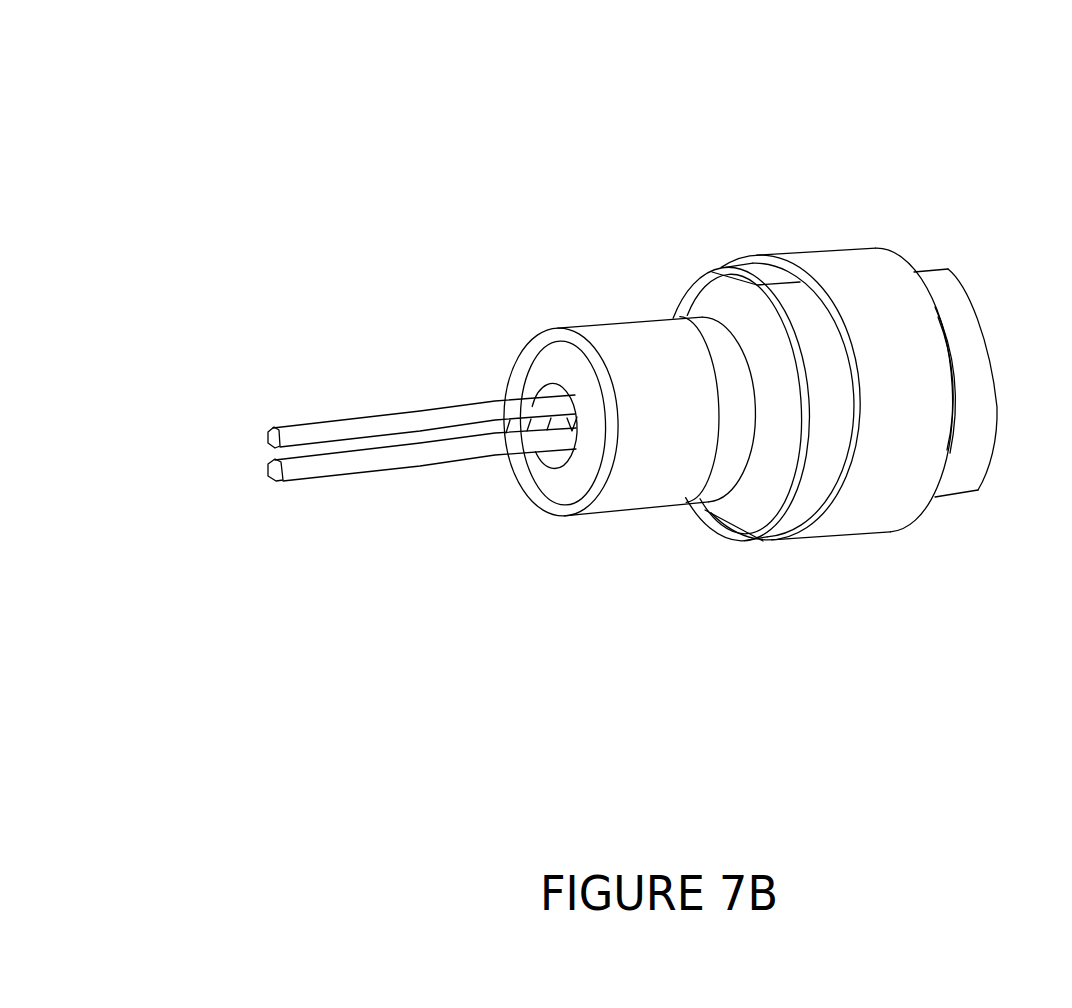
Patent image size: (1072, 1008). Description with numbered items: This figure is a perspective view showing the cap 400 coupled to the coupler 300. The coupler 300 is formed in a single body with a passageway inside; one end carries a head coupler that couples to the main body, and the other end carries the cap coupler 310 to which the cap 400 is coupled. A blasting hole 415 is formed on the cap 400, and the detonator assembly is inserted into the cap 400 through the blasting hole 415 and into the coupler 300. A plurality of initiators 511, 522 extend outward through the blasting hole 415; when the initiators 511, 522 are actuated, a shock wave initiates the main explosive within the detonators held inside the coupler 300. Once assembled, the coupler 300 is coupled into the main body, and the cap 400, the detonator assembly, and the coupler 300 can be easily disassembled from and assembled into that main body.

The coupler 300 is at (854, 291).
The cap coupler 310 is at (708, 485).
The cap 400 is at (628, 306).
The blasting hole 415 is at (469, 353).
The initiator 522 is at (362, 385).
The initiator 511 is at (379, 536).